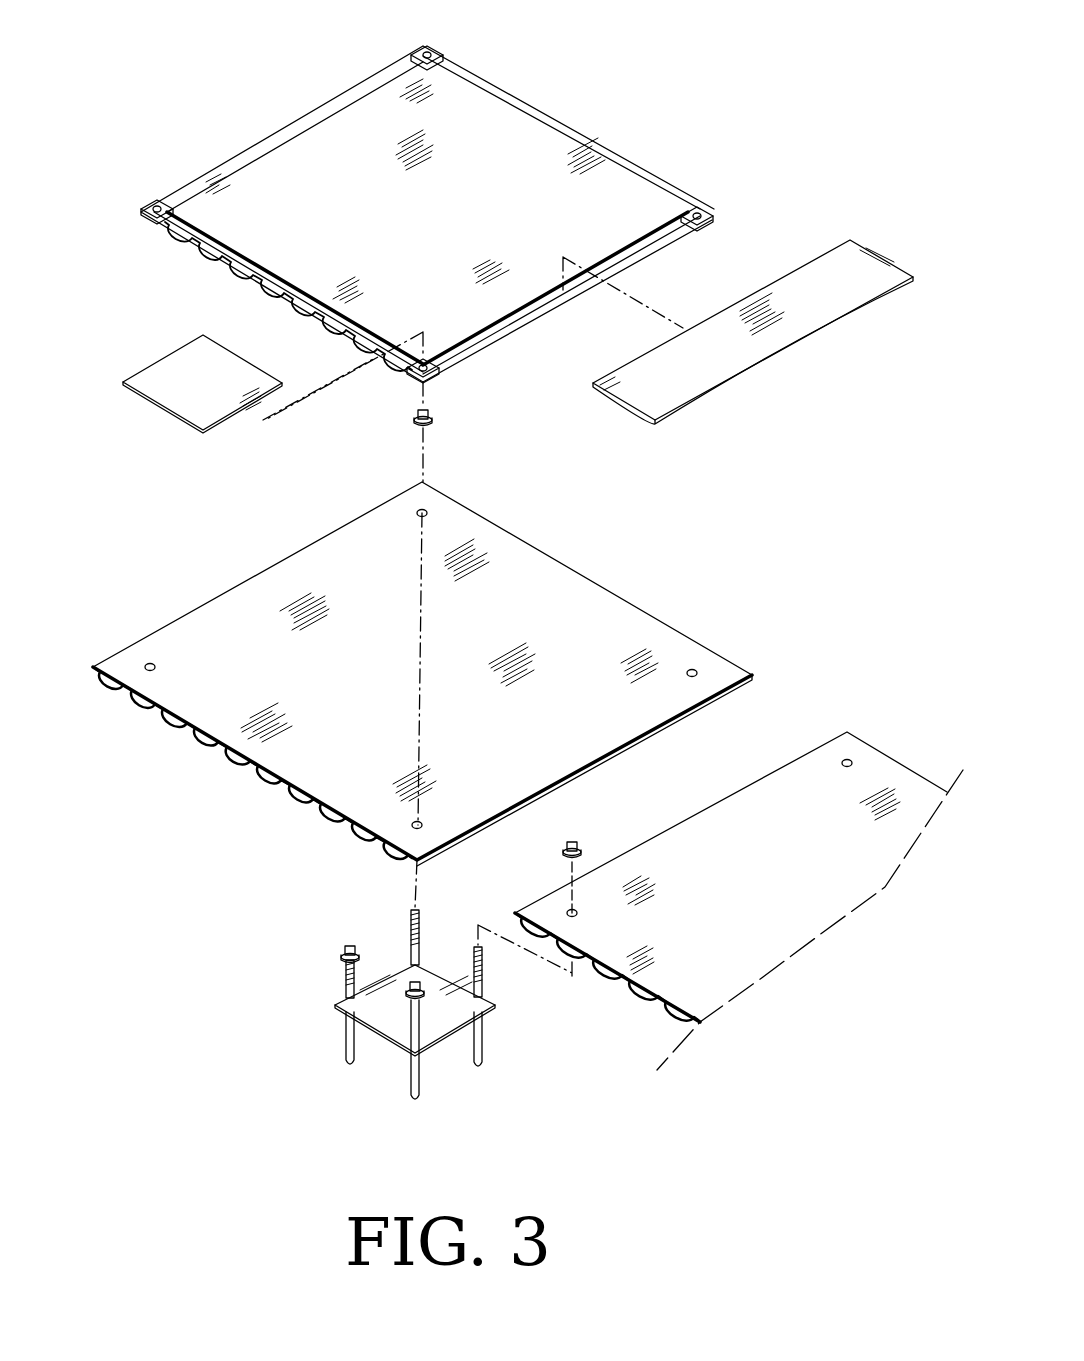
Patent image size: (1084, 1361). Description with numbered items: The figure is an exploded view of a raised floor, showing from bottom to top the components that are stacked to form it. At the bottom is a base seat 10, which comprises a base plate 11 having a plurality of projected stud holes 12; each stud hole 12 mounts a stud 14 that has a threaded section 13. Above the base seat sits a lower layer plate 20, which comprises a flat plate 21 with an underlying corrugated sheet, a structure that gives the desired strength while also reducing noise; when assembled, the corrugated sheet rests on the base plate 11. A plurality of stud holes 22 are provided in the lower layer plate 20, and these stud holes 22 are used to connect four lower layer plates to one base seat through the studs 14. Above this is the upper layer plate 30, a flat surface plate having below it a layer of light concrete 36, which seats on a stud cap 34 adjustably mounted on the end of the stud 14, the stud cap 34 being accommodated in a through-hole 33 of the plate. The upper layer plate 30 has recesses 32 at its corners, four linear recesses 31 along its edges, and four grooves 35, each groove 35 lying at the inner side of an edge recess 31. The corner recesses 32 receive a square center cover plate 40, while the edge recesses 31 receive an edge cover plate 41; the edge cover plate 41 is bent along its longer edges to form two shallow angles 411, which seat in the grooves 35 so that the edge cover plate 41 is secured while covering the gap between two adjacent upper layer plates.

The base seat 10 is at (421, 1016).
The base plate 11 is at (400, 1028).
The projected stud hole 12 is at (345, 997).
The threaded section 13 is at (347, 973).
The stud 14 is at (347, 1037).
The lower layer plate 20 is at (504, 776).
The flat plate 21 is at (582, 608).
The stud hole 22 is at (148, 665).
The upper layer plate 30 is at (436, 220).
The linear recess 31 is at (563, 128).
The corner recess 32 is at (443, 373).
The through-hole 33 is at (710, 213).
The stud cap 34 is at (432, 420).
The groove 35 is at (488, 330).
The light concrete layer 36 is at (237, 268).
The center cover plate 40 is at (183, 400).
The edge cover plate 41 is at (753, 360).
The shallow angle 411 is at (687, 403).